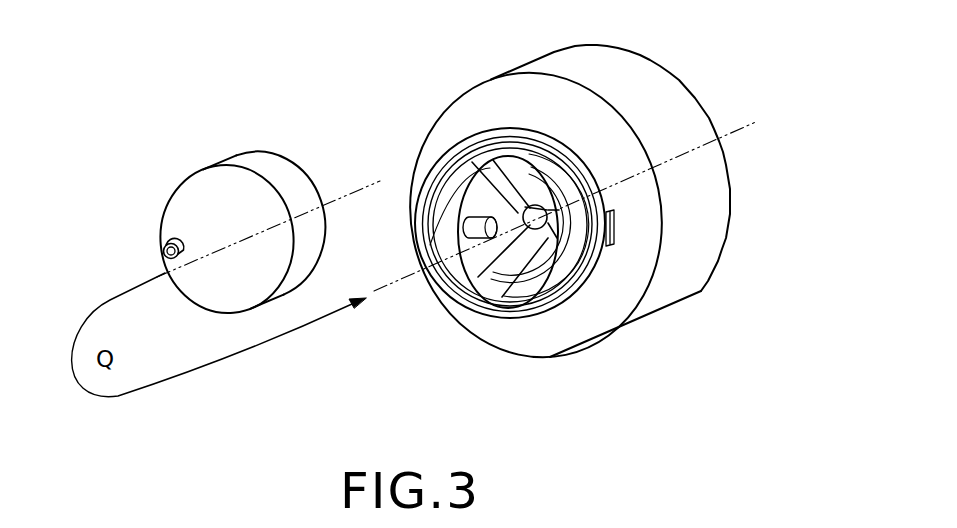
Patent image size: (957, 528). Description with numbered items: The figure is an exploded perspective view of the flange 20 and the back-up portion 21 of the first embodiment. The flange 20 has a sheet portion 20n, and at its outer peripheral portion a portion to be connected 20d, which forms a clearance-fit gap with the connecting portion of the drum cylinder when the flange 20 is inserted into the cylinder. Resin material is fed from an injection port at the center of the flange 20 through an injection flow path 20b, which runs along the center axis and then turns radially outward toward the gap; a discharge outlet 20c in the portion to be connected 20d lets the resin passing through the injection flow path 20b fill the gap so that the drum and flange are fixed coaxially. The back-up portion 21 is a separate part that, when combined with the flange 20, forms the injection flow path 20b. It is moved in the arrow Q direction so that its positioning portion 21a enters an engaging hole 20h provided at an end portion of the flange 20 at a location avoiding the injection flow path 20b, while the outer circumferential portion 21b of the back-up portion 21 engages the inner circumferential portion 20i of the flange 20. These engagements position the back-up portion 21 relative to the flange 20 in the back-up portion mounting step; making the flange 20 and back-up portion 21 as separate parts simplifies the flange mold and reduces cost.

The flange 20 is at (575, 373).
The sheet portion 20n is at (635, 87).
The portion to be connected 20d is at (598, 178).
The discharge outlet 20c is at (620, 268).
The inner circumferential portion 20i is at (458, 272).
The engaging hole 20h is at (463, 223).
The injection flow path 20b is at (456, 213).
The back-up portion 21 is at (190, 158).
The positioning portion 21a is at (167, 248).
The outer circumferential portion 21b is at (287, 182).